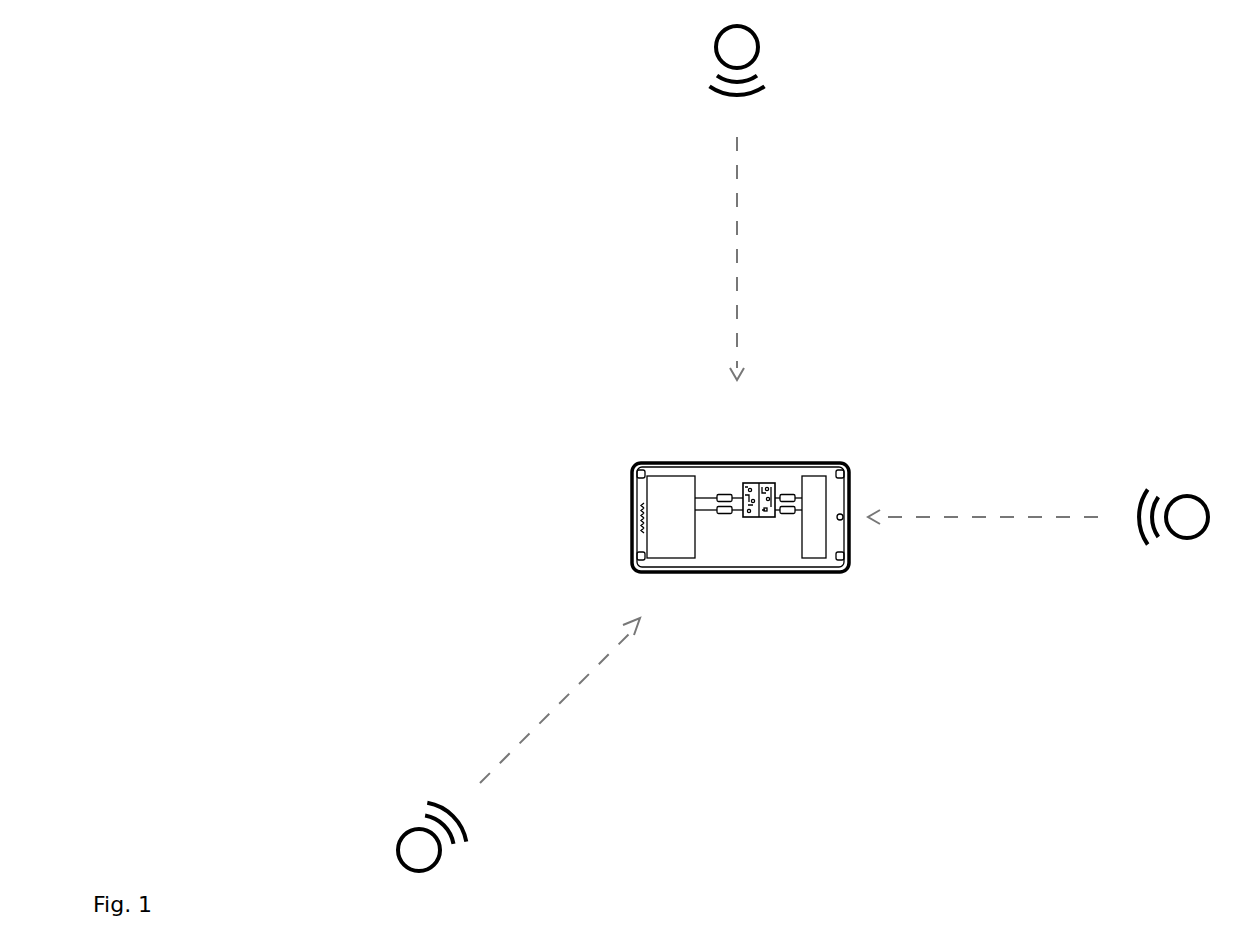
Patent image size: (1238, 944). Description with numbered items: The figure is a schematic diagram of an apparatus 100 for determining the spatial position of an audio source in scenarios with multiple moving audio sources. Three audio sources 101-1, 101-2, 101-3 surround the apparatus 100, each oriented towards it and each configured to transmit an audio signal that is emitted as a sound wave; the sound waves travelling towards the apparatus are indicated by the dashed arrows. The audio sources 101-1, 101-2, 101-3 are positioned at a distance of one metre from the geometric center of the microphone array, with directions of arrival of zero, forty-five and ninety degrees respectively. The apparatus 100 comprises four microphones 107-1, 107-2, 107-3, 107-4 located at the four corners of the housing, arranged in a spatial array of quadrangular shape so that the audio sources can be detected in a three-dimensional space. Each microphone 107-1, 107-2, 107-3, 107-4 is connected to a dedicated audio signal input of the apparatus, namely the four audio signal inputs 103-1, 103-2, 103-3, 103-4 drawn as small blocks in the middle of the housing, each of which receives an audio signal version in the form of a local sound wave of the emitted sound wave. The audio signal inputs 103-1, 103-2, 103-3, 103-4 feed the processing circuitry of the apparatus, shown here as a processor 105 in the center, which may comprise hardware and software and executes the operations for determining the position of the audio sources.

The apparatus 100 is at (602, 330).
The audio source 101-1 is at (719, 40).
The audio source 101-2 is at (1180, 497).
The audio source 101-3 is at (407, 830).
The audio signal input 103-1 is at (722, 495).
The audio signal input 103-2 is at (790, 496).
The audio signal input 103-3 is at (790, 512).
The audio signal input 103-4 is at (722, 512).
The processor 105 is at (757, 486).
The microphone 107-1 is at (636, 471).
The microphone 107-2 is at (841, 472).
The microphone 107-3 is at (840, 559).
The microphone 107-4 is at (639, 559).